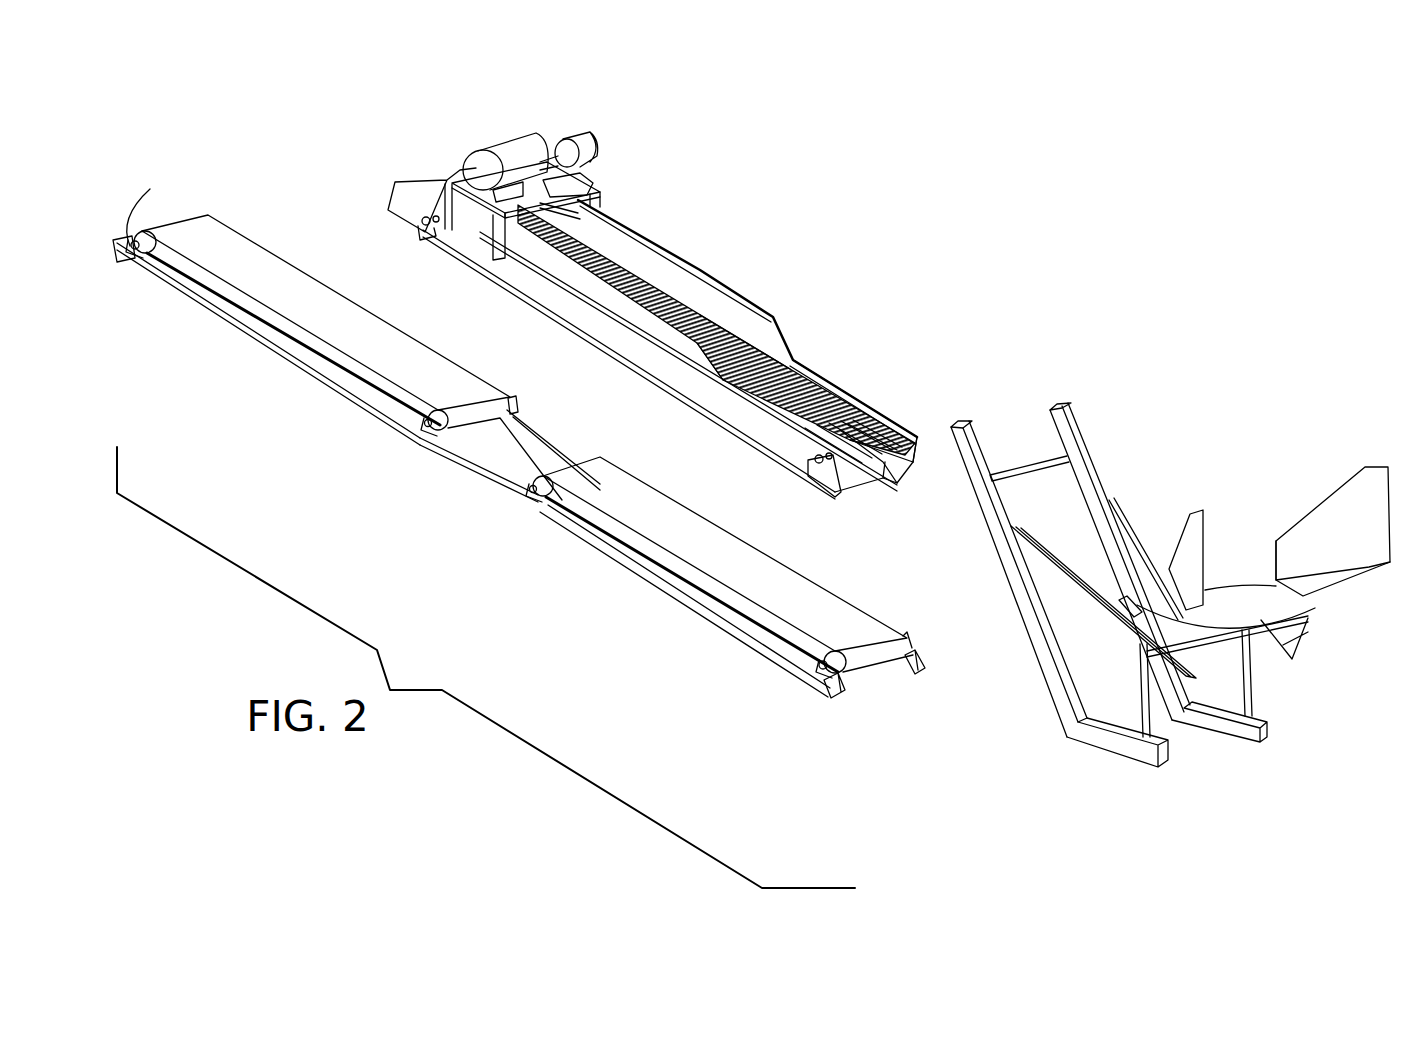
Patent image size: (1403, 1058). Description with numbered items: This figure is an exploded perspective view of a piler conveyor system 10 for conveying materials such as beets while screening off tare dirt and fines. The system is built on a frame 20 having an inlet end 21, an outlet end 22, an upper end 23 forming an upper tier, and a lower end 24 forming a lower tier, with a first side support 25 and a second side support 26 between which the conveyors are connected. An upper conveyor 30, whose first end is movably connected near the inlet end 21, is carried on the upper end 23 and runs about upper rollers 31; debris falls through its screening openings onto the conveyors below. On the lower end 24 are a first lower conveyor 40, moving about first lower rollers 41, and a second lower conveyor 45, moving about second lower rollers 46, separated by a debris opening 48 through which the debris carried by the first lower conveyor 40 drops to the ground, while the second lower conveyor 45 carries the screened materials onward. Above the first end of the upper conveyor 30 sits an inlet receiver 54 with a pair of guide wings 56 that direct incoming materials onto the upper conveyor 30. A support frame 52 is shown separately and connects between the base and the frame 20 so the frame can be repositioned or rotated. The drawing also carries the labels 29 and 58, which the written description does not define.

The piler conveyor system 10 is at (980, 211).
The frame 20 is at (780, 335).
The inlet end 21 is at (840, 698).
The outlet end 22 is at (395, 182).
The upper end 23 is at (832, 384).
The lower end 24 is at (613, 563).
The first side support 25 is at (340, 390).
The second side support 26 is at (897, 417).
The screen 29 is at (673, 268).
The upper conveyor 30 is at (790, 345).
The upper rollers 31 is at (442, 241).
The first lower conveyor 40 is at (800, 601).
The first lower rollers 41 is at (543, 498).
The second lower conveyor 45 is at (297, 288).
The second lower rollers 46 is at (147, 257).
The debris opening 48 is at (483, 447).
The support frame 52 is at (1064, 738).
The inlet receiver 54 is at (1344, 498).
The guide wings 56 is at (1222, 587).
The motor 58 is at (503, 152).